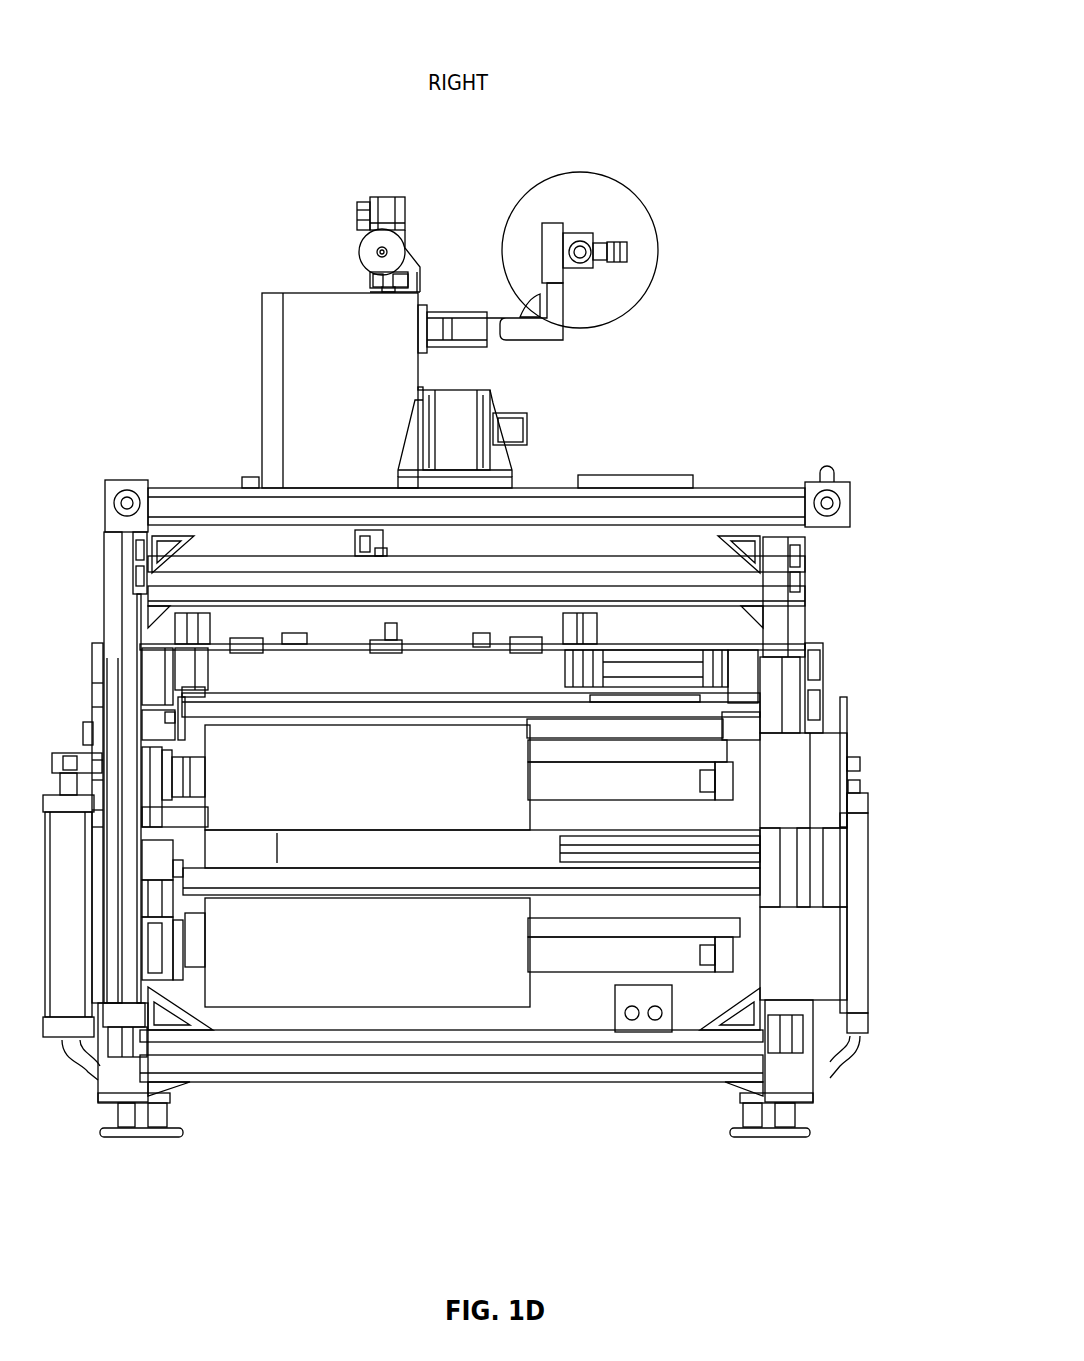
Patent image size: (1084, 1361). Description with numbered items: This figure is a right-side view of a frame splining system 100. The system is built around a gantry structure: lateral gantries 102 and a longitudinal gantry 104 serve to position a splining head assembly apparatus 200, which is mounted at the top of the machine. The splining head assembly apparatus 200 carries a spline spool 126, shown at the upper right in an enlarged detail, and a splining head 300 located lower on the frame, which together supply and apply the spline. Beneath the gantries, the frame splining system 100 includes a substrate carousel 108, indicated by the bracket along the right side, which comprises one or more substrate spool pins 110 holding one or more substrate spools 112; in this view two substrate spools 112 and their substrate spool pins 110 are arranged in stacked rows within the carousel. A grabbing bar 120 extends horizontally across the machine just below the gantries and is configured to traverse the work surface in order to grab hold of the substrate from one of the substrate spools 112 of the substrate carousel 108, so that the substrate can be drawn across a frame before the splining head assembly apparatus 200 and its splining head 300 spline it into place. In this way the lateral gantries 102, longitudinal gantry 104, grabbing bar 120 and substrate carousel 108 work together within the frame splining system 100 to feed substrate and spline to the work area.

The frame splining system 100 is at (866, 54).
The lateral gantries 102 is at (690, 567).
The longitudinal gantry 104 is at (477, 453).
The substrate carousel 108 is at (870, 700).
The substrate spool pins 110 is at (603, 790).
The substrate spools 112 is at (392, 793).
The grabbing bar 120 is at (297, 635).
The spline spool 126 is at (645, 208).
The splining head assembly apparatus 200 is at (360, 408).
The splining head 300 is at (392, 550).